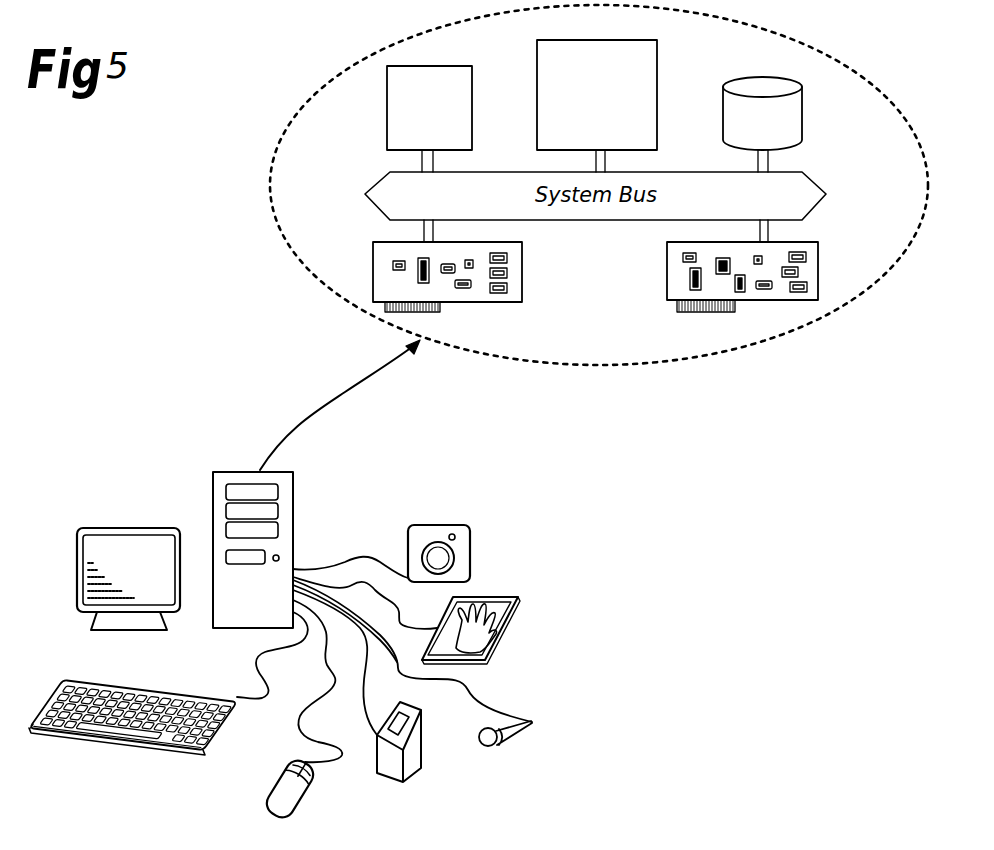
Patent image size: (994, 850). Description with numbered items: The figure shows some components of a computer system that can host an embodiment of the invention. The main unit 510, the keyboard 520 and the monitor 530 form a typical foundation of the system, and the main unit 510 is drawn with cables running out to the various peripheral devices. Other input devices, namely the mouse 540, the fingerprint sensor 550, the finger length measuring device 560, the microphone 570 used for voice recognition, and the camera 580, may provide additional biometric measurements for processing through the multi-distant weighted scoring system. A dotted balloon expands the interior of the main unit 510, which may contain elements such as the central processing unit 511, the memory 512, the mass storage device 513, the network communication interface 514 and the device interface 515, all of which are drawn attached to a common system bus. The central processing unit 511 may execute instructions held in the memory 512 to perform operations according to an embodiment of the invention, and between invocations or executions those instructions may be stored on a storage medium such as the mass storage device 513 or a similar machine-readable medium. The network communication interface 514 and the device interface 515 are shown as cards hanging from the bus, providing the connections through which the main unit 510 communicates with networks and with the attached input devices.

The main unit 510 is at (253, 550).
The central processing unit 511 is at (429, 119).
The memory 512 is at (597, 106).
The mass storage device 513 is at (762, 124).
The network communication interface 514 is at (447, 273).
The device interface 515 is at (742, 273).
The keyboard 520 is at (168, 694).
The monitor 530 is at (128, 579).
The mouse 540 is at (302, 711).
The fingerprint sensor 550 is at (362, 699).
The finger length measuring device 560 is at (413, 621).
The microphone 570 is at (415, 671).
The camera 580 is at (402, 554).